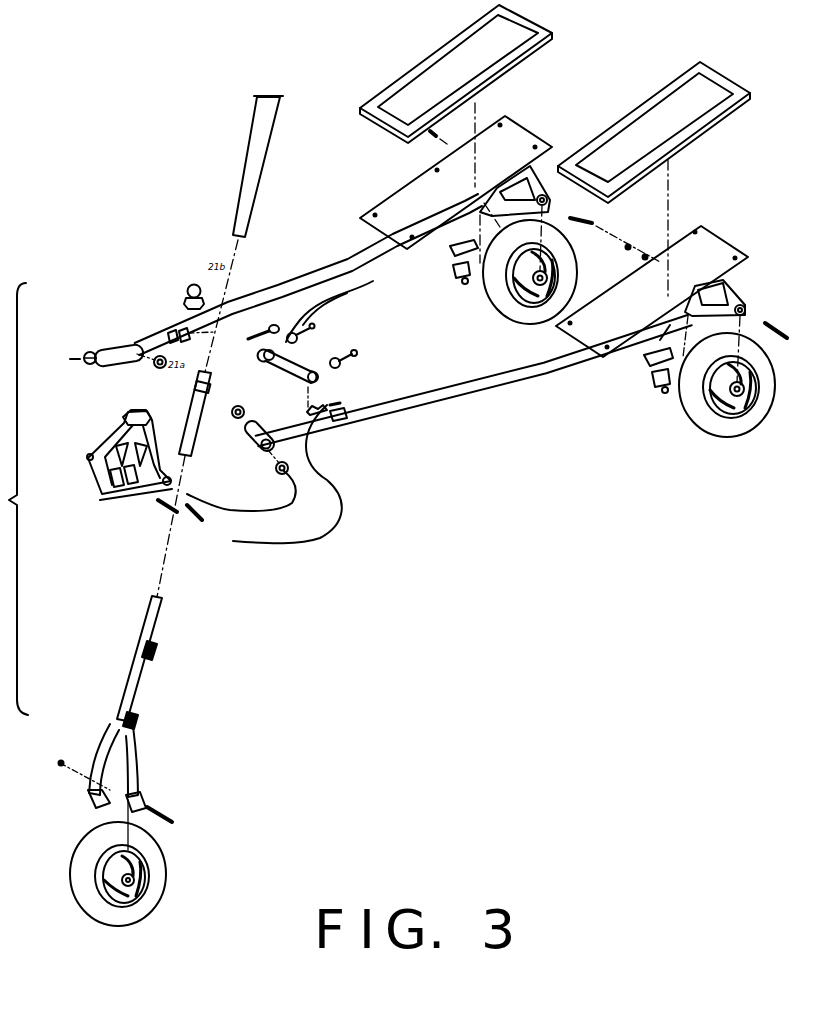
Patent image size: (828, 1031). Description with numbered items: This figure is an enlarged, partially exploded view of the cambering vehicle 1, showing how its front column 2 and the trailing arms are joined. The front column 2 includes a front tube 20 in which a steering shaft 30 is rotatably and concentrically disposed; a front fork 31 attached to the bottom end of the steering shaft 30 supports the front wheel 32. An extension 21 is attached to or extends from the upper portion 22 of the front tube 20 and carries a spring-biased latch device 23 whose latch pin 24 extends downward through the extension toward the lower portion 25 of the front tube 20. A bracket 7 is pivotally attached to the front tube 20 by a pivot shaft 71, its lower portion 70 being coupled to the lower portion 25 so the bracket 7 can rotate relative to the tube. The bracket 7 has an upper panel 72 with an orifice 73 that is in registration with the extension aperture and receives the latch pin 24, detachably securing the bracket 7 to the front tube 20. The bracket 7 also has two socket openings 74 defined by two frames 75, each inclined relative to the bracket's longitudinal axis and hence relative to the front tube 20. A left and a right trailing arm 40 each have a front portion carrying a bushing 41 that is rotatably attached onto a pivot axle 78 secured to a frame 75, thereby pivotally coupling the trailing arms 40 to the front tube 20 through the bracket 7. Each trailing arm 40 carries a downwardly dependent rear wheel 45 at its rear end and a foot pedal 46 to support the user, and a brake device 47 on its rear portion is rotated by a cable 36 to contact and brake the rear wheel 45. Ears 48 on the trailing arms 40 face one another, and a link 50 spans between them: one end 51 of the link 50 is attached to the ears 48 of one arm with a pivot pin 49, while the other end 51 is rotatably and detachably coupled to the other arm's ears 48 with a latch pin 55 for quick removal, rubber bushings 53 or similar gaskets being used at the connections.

The cambering vehicle 1 is at (148, 150).
The front column 2 is at (126, 247).
The bracket 7 is at (113, 498).
The front tube 20 is at (184, 396).
The extension 21 is at (214, 391).
The upper portion 22 is at (229, 371).
The spring-biased latch device 23 is at (195, 285).
The latch pin 24 is at (186, 305).
The lower portion 25 is at (188, 451).
The steering shaft 30 is at (258, 147).
The front fork 31 is at (128, 682).
The front wheel 32 is at (160, 875).
The cable 36 is at (333, 524).
The trailing arm 40 is at (343, 264).
The bushing 41 is at (116, 348).
The rear wheel 45 is at (516, 320).
The foot pedal 46 is at (517, 136).
The brake device 47 is at (465, 270).
The ear 48 is at (172, 334).
The pivot pin 49 is at (325, 407).
The link 50 is at (304, 363).
The end 51 is at (320, 378).
The rubber bushing 53 is at (313, 324).
The latch pin 55 is at (272, 322).
The lower portion 70 is at (129, 497).
The pivot shaft 71 is at (167, 517).
The upper panel 72 is at (113, 402).
The orifice 73 is at (118, 416).
The socket opening 74 is at (157, 473).
The frame 75 is at (187, 494).
The pivot axle 78 is at (200, 528).